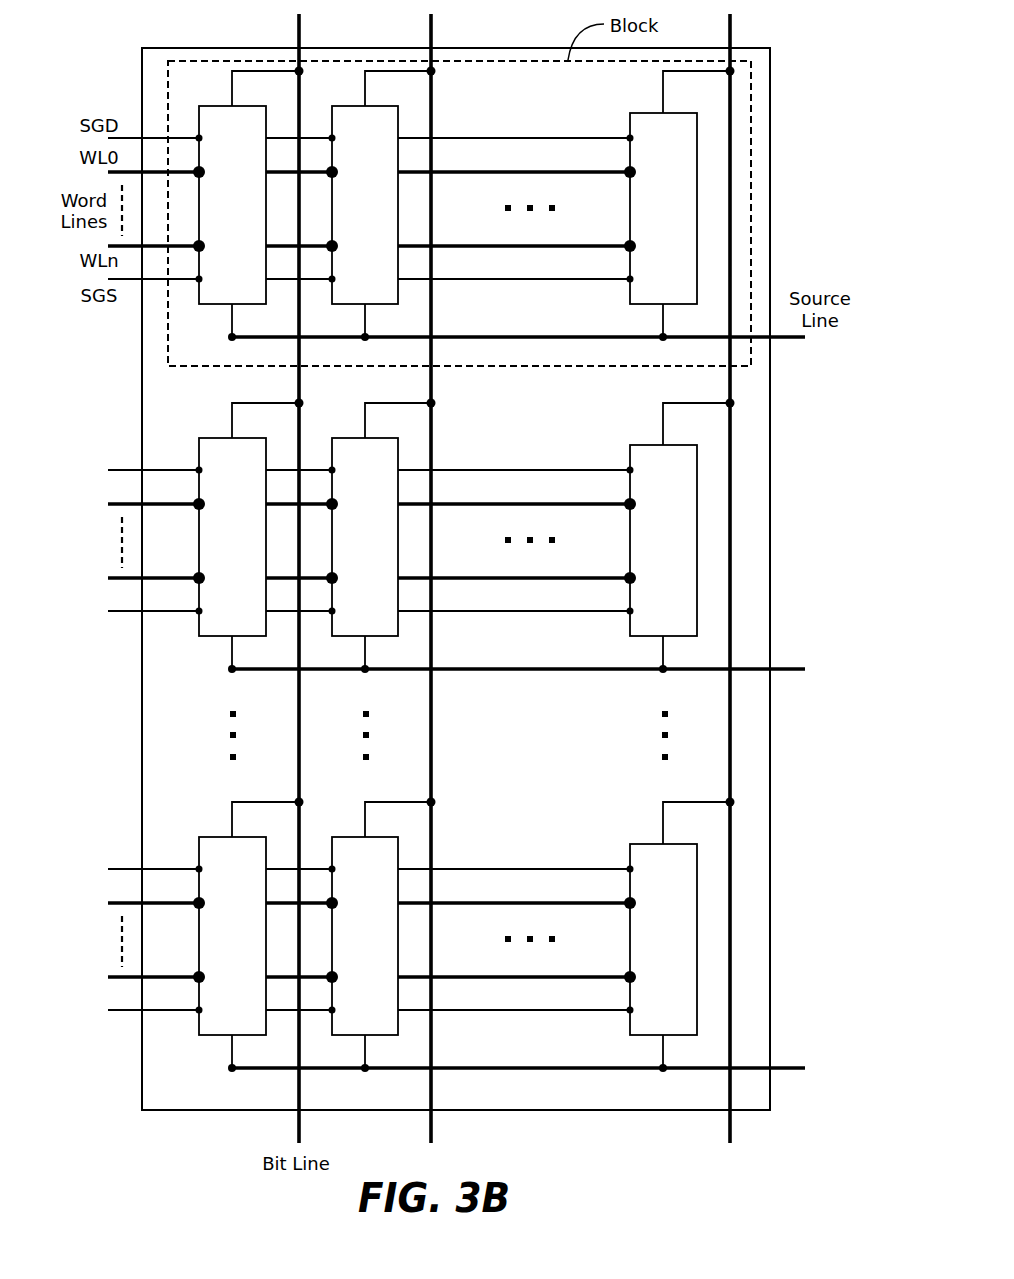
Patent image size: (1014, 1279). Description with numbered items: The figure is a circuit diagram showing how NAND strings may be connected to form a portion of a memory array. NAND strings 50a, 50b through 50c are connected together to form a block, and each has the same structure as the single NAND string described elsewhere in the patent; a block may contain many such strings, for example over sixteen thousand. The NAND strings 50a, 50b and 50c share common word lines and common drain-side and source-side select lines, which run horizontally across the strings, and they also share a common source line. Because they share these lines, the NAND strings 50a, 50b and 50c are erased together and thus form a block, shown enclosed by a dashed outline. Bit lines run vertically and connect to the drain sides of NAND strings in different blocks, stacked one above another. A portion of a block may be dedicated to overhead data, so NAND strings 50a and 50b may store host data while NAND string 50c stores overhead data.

The NAND string 50a is at (212, 210).
The NAND string 50b is at (346, 210).
The NAND string 50c is at (682, 210).